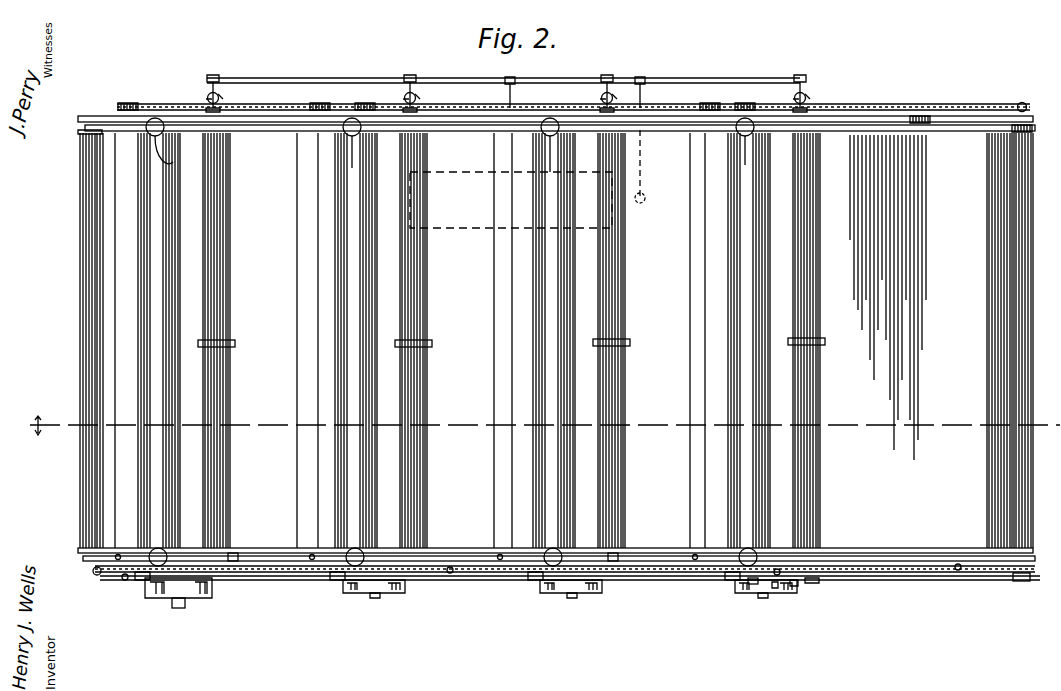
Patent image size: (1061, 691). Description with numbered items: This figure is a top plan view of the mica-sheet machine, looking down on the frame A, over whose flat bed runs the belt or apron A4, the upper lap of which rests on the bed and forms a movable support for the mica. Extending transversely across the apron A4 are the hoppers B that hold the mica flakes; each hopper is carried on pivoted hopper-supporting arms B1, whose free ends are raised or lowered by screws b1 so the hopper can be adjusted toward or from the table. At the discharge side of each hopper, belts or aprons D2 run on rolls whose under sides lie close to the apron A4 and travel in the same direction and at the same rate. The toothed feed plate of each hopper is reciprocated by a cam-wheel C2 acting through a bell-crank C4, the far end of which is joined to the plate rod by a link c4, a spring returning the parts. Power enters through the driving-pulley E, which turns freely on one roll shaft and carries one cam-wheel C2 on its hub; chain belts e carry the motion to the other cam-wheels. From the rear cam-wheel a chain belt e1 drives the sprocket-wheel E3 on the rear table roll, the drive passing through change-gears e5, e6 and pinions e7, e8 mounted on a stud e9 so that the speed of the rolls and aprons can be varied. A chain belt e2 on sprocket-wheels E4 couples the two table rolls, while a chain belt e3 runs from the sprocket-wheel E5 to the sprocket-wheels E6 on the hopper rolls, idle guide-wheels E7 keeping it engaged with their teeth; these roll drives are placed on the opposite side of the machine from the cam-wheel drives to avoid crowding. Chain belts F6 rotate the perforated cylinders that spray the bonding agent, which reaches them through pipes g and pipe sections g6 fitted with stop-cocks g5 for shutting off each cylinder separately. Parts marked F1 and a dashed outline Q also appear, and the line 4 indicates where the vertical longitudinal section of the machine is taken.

The frame A is at (992, 232).
The belt or apron A4 is at (85, 318).
The hopper B is at (118, 236).
The hopper-supporting arm B1 is at (265, 128).
The adjusting screw b1 is at (742, 552).
The cam-wheel C2 is at (212, 590).
The bell-crank C4 is at (140, 576).
The link c4 is at (118, 554).
The belt or apron D2 is at (454, 340).
The driving-pulley E is at (195, 600).
The sprocket-wheel E3 is at (1022, 582).
The sprocket-wheel E4 is at (94, 571).
The sprocket-wheel E5 is at (1022, 103).
The sprocket-wheel E6 is at (362, 103).
The idle guide-wheel E7 is at (172, 108).
The chain belt e is at (285, 580).
The chain belt e1 is at (945, 578).
The chain belt e2 is at (122, 578).
The chain belt e3 is at (288, 103).
The change-gear e5 is at (752, 582).
The change-gear e6 is at (815, 582).
The pinion e7 is at (795, 586).
The pinion e8 is at (775, 588).
The stud e9 is at (777, 569).
The shaft F1 is at (228, 220).
The chain belt F6 is at (232, 556).
The pipe g is at (218, 88).
The stop-cock g5 is at (208, 100).
The pipe section g6 is at (222, 110).
The dashed outline of device Q is at (527, 179).
The section line 4 is at (533, 427).